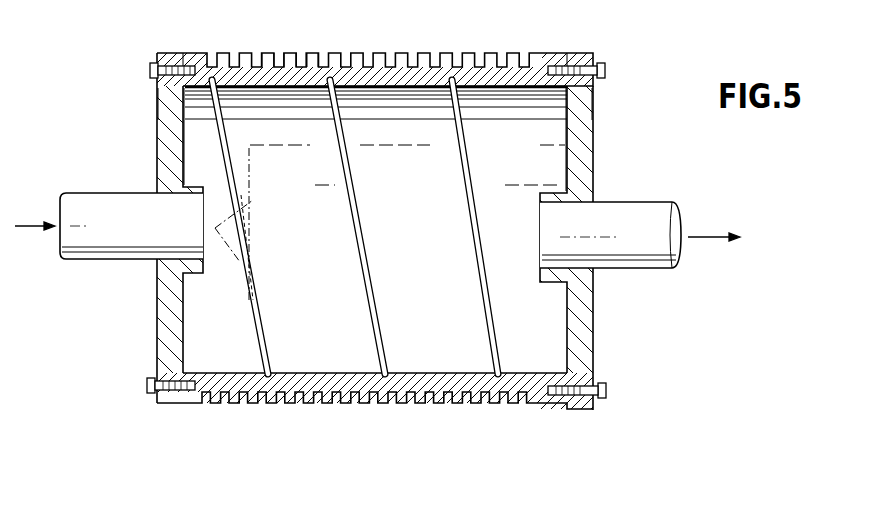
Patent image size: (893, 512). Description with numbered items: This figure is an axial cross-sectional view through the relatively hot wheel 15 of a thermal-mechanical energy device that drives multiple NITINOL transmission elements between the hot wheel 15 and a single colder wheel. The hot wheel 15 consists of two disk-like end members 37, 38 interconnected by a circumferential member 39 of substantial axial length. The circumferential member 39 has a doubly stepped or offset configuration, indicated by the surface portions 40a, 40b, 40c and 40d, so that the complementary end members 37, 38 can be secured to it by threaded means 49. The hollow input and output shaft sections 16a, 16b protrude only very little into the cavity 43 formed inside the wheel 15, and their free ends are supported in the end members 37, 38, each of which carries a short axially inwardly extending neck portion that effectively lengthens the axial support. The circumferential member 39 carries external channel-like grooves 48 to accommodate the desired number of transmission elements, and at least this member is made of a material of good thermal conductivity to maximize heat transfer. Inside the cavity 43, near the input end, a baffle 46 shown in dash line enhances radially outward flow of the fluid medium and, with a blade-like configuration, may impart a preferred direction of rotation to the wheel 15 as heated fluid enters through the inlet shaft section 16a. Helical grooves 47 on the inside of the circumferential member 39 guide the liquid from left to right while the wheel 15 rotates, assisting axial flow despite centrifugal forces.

The hot wheel 15 is at (384, 411).
The input shaft section 16a is at (94, 208).
The output shaft section 16b is at (645, 218).
The end member 37 is at (163, 128).
The end member 38 is at (592, 152).
The circumferential member 39 is at (428, 64).
The surface portion 40a is at (172, 62).
The surface portion 40b is at (168, 100).
The surface portion 40c is at (597, 110).
The surface portion 40d is at (590, 62).
The cavity 43 is at (416, 229).
The baffle 46 is at (254, 203).
The helical grooves 47 is at (383, 334).
The channel-like grooves 48 is at (318, 61).
The threaded means 49 is at (150, 66).